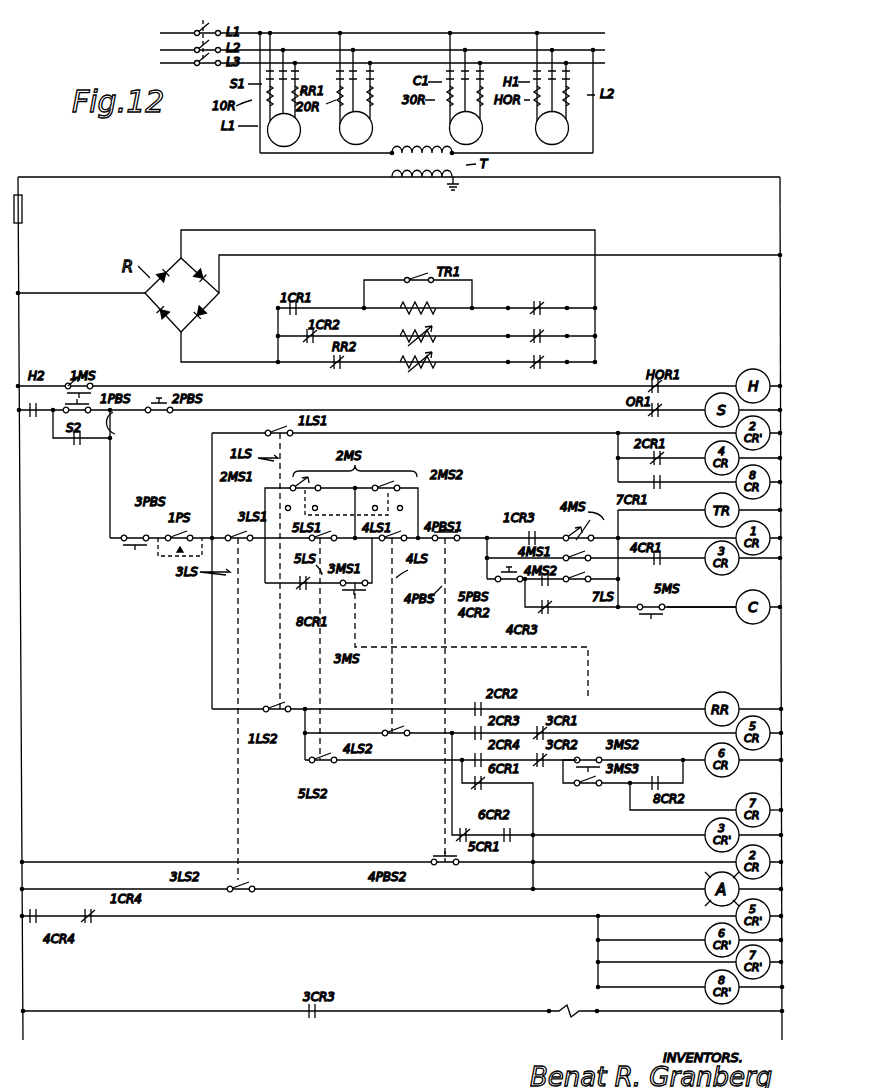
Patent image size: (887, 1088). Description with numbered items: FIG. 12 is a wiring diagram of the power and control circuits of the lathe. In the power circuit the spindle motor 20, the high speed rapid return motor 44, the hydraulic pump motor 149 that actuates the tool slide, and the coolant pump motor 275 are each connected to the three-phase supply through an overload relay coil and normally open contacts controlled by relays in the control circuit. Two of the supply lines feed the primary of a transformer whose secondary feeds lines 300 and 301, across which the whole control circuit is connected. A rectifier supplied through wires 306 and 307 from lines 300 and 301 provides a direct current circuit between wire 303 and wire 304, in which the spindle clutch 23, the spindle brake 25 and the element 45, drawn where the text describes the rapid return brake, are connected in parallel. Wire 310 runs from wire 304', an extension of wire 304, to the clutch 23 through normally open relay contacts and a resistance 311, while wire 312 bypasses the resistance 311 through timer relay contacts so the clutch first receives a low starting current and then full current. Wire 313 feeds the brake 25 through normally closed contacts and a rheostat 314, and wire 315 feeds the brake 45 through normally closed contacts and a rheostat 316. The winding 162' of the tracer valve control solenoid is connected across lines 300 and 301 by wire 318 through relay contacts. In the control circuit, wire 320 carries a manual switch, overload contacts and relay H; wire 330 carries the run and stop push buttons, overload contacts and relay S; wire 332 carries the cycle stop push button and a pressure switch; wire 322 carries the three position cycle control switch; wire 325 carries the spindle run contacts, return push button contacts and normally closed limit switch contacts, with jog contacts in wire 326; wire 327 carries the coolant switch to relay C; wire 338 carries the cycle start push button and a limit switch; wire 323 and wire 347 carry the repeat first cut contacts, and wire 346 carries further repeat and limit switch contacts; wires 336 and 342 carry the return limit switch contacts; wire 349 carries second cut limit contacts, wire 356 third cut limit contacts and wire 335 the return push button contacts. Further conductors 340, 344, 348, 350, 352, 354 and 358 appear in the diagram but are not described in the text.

The spindle motor 20 is at (268, 137).
The high speed rapid return motor 44 is at (339, 136).
The coolant pump motor 275 is at (449, 132).
The hydraulic pump motor 149 is at (535, 132).
The line 300 is at (208, 186).
The line 301 is at (553, 186).
The wire 303 is at (376, 231).
The wire 304 is at (229, 347).
The wire 304' is at (252, 335).
The wire 306 is at (51, 294).
The wire 307 is at (542, 259).
The wire 310 is at (336, 309).
The resistance 311 is at (435, 302).
The wire 312 is at (392, 275).
The wire 313 is at (436, 327).
The rheostat 314 is at (437, 328).
The wire 315 is at (300, 362).
The rheostat 316 is at (435, 354).
The wire 318 is at (391, 1012).
The wire 320 is at (313, 386).
The wire 322 is at (470, 488).
The wire 323 is at (258, 608).
The wire 325 is at (262, 530).
The wire 326 is at (562, 476).
The wire 327 is at (703, 609).
The wire 330 is at (115, 434).
The wire 332 is at (110, 487).
The wire 335 is at (324, 861).
The wire 336 is at (246, 443).
The wire 338 is at (472, 579).
The conductor 340 is at (77, 442).
The wire 342 is at (212, 645).
The conductor 344 is at (302, 760).
The wire 346 is at (408, 773).
The wire 347 is at (604, 799).
The conductor 348 is at (458, 792).
The wire 349 is at (434, 735).
The conductor 350 is at (350, 710).
The conductor 352 is at (333, 734).
The mechanical linkage 354 is at (445, 803).
The wire 356 is at (324, 887).
The conductor 358 is at (334, 922).
The winding 162' is at (553, 1018).
The spindle clutch 23 is at (539, 308).
The spindle brake 25 is at (541, 335).
The contact 45 is at (541, 361).